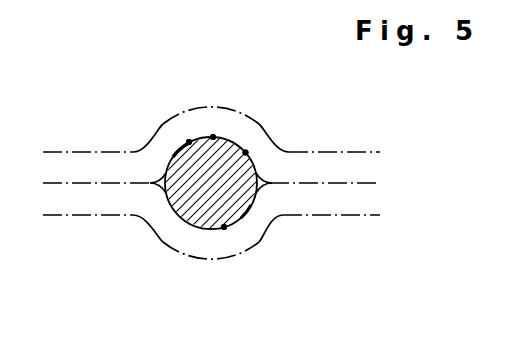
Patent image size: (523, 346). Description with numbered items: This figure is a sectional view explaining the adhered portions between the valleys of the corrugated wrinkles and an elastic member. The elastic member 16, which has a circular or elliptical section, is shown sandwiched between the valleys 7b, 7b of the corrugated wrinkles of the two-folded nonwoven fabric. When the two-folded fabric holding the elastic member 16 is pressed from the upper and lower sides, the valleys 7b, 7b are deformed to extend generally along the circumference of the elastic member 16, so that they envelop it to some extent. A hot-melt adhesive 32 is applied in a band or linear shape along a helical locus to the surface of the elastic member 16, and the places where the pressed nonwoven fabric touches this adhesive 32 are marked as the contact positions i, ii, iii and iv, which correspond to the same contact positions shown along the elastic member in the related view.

The elastic member 16 is at (185, 167).
The valleys 7b is at (202, 110).
The hot-melt adhesive 32 is at (246, 152).
The contact position i is at (213, 137).
The contact position ii is at (225, 230).
The contact position iii is at (246, 152).
The contact position iv is at (189, 141).